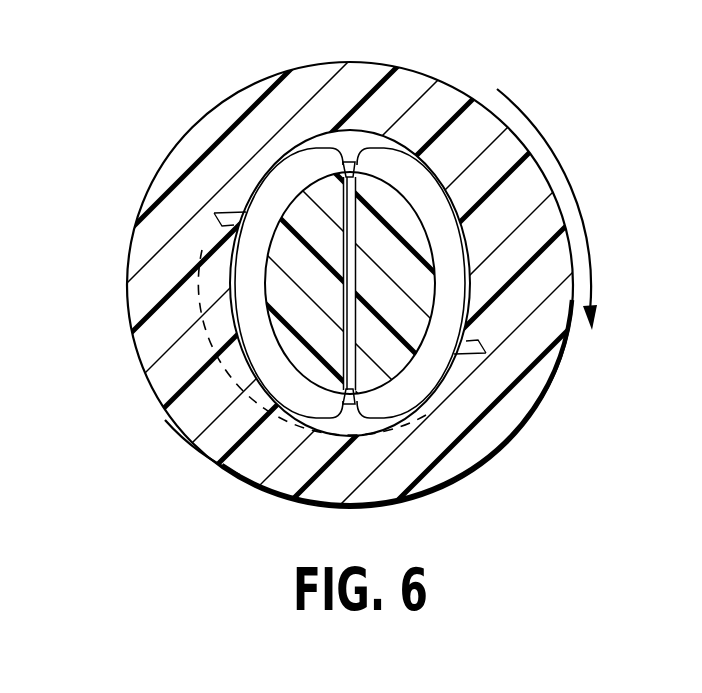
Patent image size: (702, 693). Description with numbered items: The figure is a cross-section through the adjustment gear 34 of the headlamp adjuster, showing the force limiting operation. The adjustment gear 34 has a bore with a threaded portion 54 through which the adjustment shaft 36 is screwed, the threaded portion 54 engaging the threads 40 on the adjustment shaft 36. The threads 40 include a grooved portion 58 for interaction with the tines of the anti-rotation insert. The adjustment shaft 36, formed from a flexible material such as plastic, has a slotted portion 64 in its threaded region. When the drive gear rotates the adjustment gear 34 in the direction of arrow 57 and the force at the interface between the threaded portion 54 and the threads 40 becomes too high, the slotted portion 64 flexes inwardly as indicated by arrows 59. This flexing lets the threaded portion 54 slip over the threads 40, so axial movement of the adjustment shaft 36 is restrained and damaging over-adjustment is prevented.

The adjustment gear 34 is at (223, 118).
The threads 40 is at (262, 212).
The adjustment shaft 36 is at (283, 301).
The threaded portion 54 is at (236, 373).
The arrow 57 is at (536, 193).
The grooved portion 58 is at (352, 162).
The arrows 59 is at (328, 283).
The slotted portion 64 is at (202, 446).